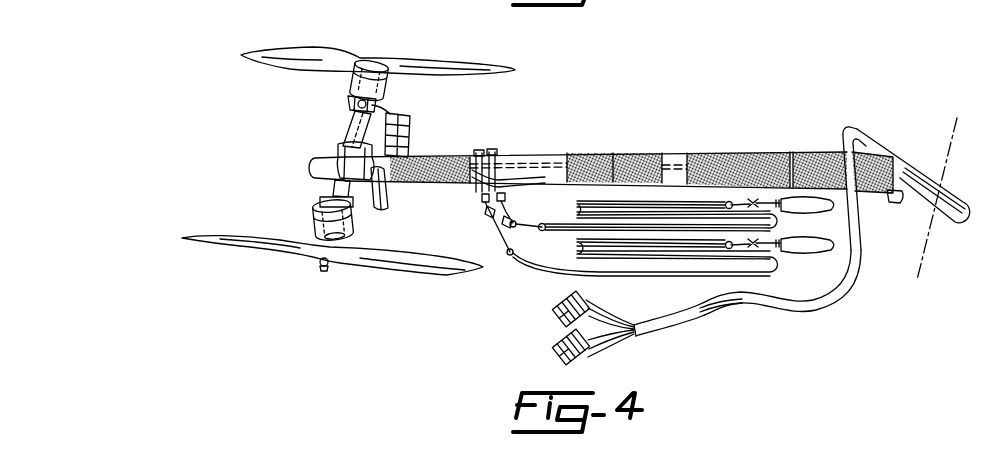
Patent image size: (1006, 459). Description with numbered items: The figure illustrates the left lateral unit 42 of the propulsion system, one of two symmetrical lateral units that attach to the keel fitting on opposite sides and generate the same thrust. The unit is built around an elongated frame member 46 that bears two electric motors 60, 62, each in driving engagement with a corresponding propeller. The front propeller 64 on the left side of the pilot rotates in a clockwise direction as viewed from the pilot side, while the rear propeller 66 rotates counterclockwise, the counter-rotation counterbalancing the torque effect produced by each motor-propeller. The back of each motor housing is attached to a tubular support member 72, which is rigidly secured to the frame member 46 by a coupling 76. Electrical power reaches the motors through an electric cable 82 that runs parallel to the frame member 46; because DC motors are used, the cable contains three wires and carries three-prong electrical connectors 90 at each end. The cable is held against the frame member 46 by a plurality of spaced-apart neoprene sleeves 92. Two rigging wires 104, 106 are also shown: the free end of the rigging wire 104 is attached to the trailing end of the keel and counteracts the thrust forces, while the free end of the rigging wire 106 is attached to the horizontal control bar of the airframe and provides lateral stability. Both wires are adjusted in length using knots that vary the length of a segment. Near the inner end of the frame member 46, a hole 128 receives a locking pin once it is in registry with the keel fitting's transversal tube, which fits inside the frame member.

The left lateral unit 42 is at (823, 115).
The elongated frame member 46 is at (672, 157).
The electric motor 60 is at (347, 83).
The electric motor 62 is at (318, 210).
The front propeller 64 is at (307, 63).
The rear propeller 66 is at (393, 260).
The tubular support member 72 is at (352, 125).
The coupling 76 is at (345, 146).
The electric cable 82 is at (817, 313).
The electrical connectors 90 is at (552, 347).
The neoprene sleeves 92 is at (813, 160).
The rigging wire 104 is at (627, 207).
The rigging wire 106 is at (700, 272).
The hole 128 is at (933, 207).